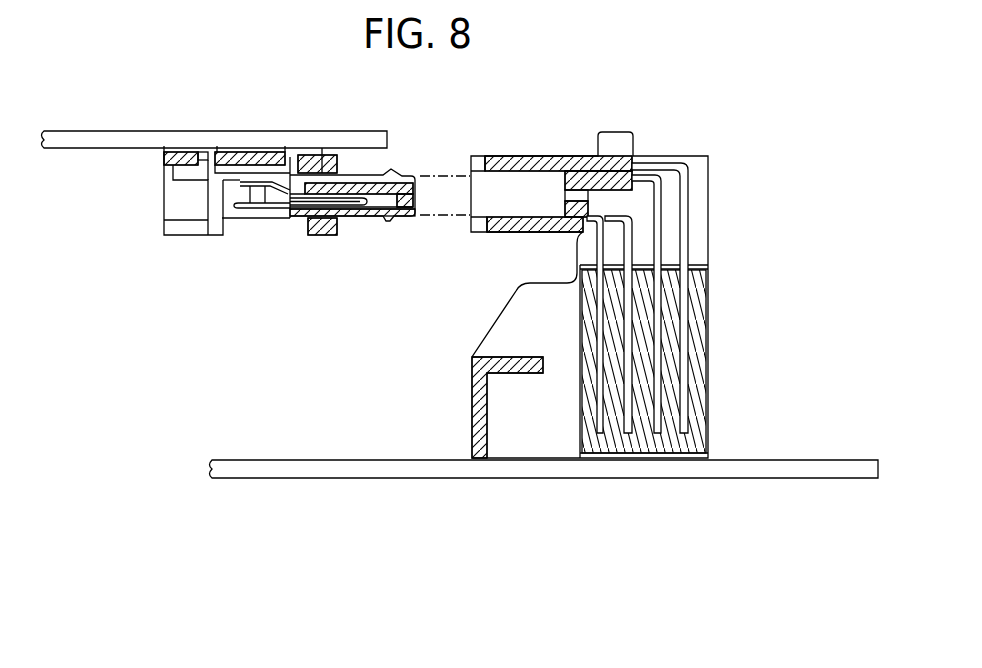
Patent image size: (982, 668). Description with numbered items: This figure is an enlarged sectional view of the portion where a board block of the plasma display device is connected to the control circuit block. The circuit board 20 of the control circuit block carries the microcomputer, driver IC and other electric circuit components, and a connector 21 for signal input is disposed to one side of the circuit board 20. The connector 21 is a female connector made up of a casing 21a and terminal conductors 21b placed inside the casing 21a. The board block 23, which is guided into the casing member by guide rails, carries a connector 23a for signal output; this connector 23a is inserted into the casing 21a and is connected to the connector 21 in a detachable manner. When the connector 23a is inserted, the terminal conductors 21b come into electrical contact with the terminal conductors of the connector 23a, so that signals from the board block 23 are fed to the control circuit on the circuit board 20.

The circuit board 20 is at (400, 467).
The connector 21 is at (644, 271).
The casing 21a is at (517, 160).
The terminal conductors 21b is at (683, 228).
The board block 23 is at (110, 138).
The connector 23a is at (206, 237).